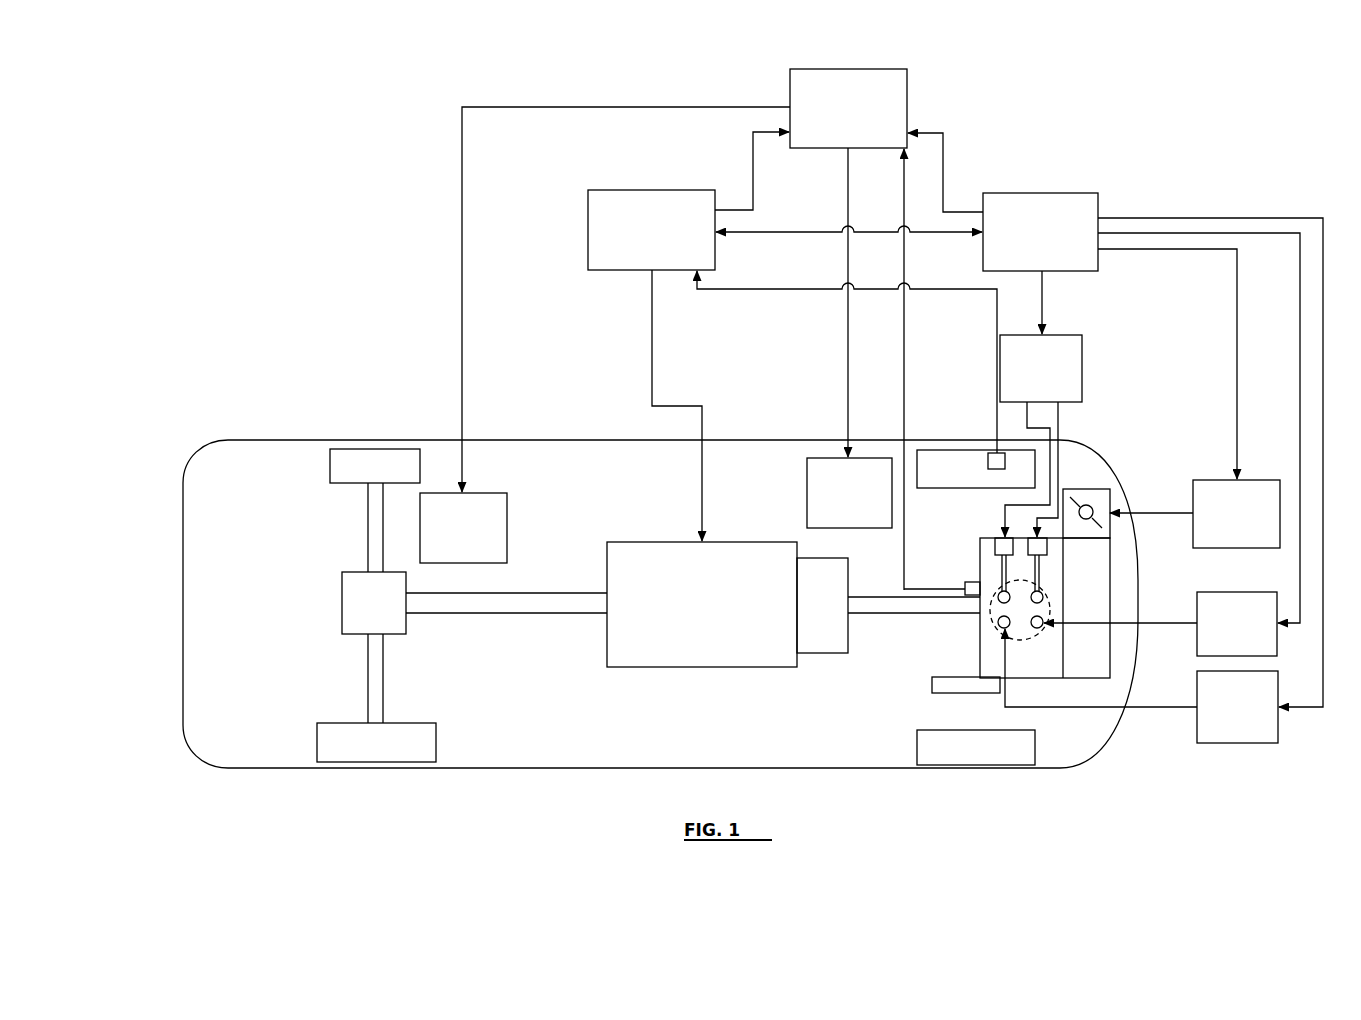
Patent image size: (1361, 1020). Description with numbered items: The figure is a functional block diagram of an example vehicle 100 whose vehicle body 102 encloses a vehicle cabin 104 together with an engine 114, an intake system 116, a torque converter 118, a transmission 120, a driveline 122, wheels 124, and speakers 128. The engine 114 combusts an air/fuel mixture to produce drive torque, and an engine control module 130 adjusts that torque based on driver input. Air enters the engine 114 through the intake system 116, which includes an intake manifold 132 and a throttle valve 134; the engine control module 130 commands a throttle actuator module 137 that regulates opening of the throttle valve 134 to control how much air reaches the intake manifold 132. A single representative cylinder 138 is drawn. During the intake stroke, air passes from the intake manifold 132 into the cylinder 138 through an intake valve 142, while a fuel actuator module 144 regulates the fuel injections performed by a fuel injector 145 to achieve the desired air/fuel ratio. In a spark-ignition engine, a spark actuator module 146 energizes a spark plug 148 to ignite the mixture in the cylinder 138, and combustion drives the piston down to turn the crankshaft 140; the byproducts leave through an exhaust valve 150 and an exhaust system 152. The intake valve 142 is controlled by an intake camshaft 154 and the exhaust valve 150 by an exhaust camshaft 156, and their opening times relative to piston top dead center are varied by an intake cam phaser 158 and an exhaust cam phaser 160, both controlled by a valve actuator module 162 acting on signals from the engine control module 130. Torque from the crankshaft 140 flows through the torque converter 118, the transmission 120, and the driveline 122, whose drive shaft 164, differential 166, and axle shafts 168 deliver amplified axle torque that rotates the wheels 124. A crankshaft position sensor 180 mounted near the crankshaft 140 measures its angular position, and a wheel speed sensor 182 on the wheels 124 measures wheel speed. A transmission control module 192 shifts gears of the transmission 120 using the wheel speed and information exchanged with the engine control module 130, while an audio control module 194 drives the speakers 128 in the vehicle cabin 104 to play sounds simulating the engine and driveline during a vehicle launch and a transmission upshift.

The vehicle 100 is at (138, 64).
The vehicle body 102 is at (277, 435).
The vehicle cabin 104 is at (537, 480).
The engine 114 is at (1017, 681).
The intake system 116 is at (1114, 503).
The torque converter 118 is at (822, 655).
The transmission 120 is at (702, 668).
The driveline 122 is at (553, 556).
The wheels 124 is at (330, 466).
The speakers 128 is at (507, 531).
The engine control module 130 is at (1042, 192).
The intake manifold 132 is at (1110, 578).
The throttle valve 134 is at (1087, 488).
The throttle actuator module 137 is at (1213, 478).
The cylinder 138 is at (1048, 593).
The crankshaft 140 is at (913, 616).
The intake valve 142 is at (1009, 604).
The fuel actuator module 144 is at (1197, 640).
The fuel injector 145 is at (1043, 626).
The spark actuator module 146 is at (1197, 722).
The spark plug 148 is at (1009, 630).
The exhaust valve 150 is at (1044, 601).
The exhaust system 152 is at (984, 698).
The intake camshaft 154 is at (1000, 571).
The exhaust camshaft 156 is at (1042, 571).
The intake cam phaser 158 is at (1005, 538).
The exhaust cam phaser 160 is at (1047, 547).
The valve actuator module 162 is at (1070, 335).
The drive shaft 164 is at (507, 615).
The differential 166 is at (342, 604).
The axle shafts 168 is at (368, 529).
The crankshaft position sensor 180 is at (965, 586).
The wheel speed sensor 182 is at (991, 452).
The transmission control module 192 is at (650, 190).
The audio control module 194 is at (908, 82).